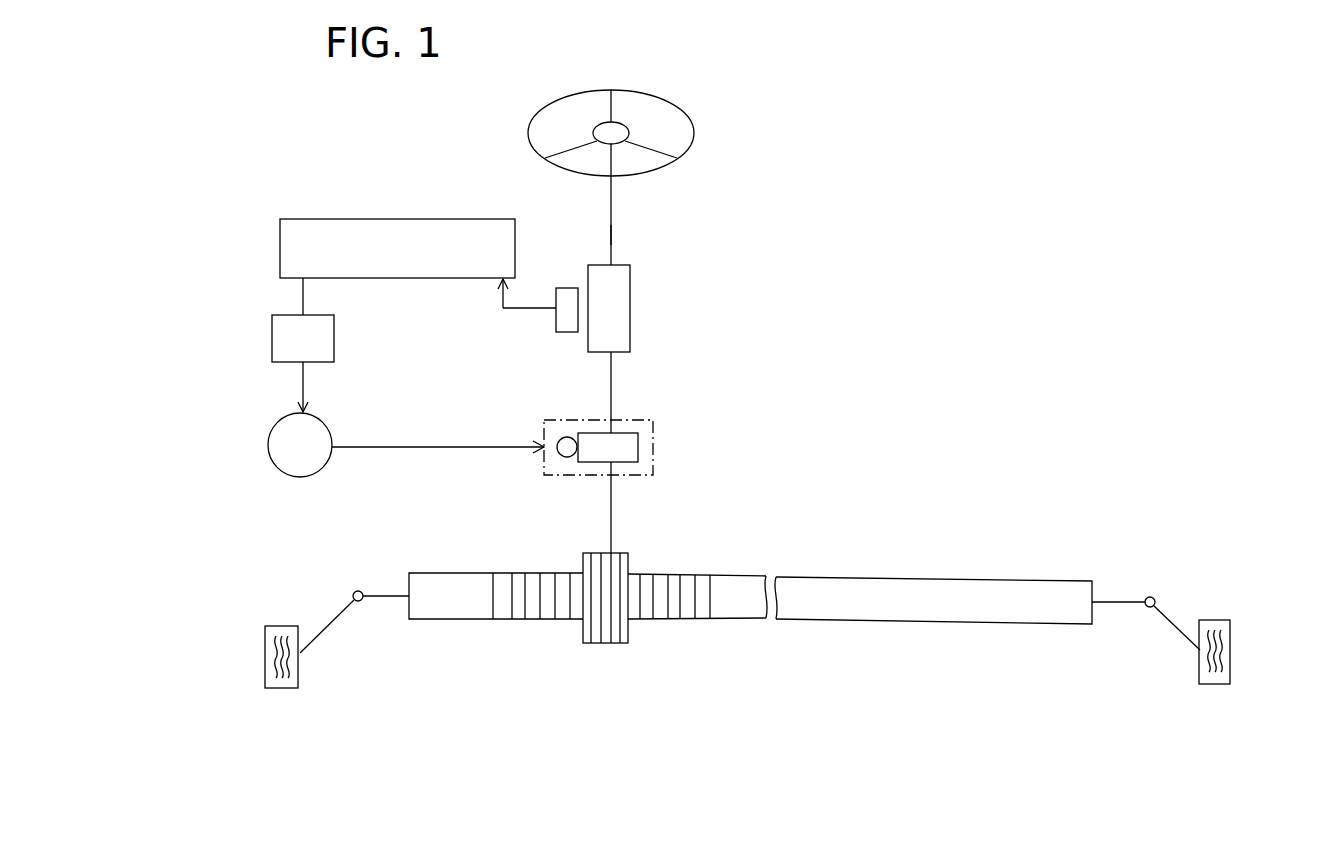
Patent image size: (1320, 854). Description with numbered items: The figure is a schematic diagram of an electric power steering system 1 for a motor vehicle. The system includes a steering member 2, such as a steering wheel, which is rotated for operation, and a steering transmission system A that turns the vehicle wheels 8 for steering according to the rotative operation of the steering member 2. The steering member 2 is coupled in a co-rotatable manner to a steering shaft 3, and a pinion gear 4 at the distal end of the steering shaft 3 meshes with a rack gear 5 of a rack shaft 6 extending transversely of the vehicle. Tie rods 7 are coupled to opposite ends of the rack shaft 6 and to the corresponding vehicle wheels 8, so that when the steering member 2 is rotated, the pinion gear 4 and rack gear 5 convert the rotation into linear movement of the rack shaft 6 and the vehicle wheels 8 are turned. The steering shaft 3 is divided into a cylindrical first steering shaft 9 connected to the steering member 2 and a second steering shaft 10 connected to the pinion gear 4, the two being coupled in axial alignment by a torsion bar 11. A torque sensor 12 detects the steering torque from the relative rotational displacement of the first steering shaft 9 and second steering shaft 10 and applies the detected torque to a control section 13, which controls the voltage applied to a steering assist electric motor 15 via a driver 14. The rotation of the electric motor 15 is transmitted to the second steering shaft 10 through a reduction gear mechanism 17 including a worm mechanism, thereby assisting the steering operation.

The electric power steering system 1 is at (805, 298).
The steering transmission system A is at (748, 412).
The steering member 2 is at (677, 104).
The steering shaft 3 is at (612, 233).
The pinion gear 4 is at (597, 643).
The rack gear 5 is at (550, 612).
The rack shaft 6 is at (737, 602).
The tie rods 7 is at (385, 598).
The vehicle wheels 8 is at (275, 688).
The first steering shaft 9 is at (611, 215).
The second steering shaft 10 is at (611, 380).
The torsion bar 11 is at (622, 318).
The torque sensor 12 is at (565, 288).
The control section 13 is at (318, 218).
The driver 14 is at (272, 332).
The steering assist electric motor 15 is at (268, 447).
The reduction gear mechanism 17 is at (653, 460).